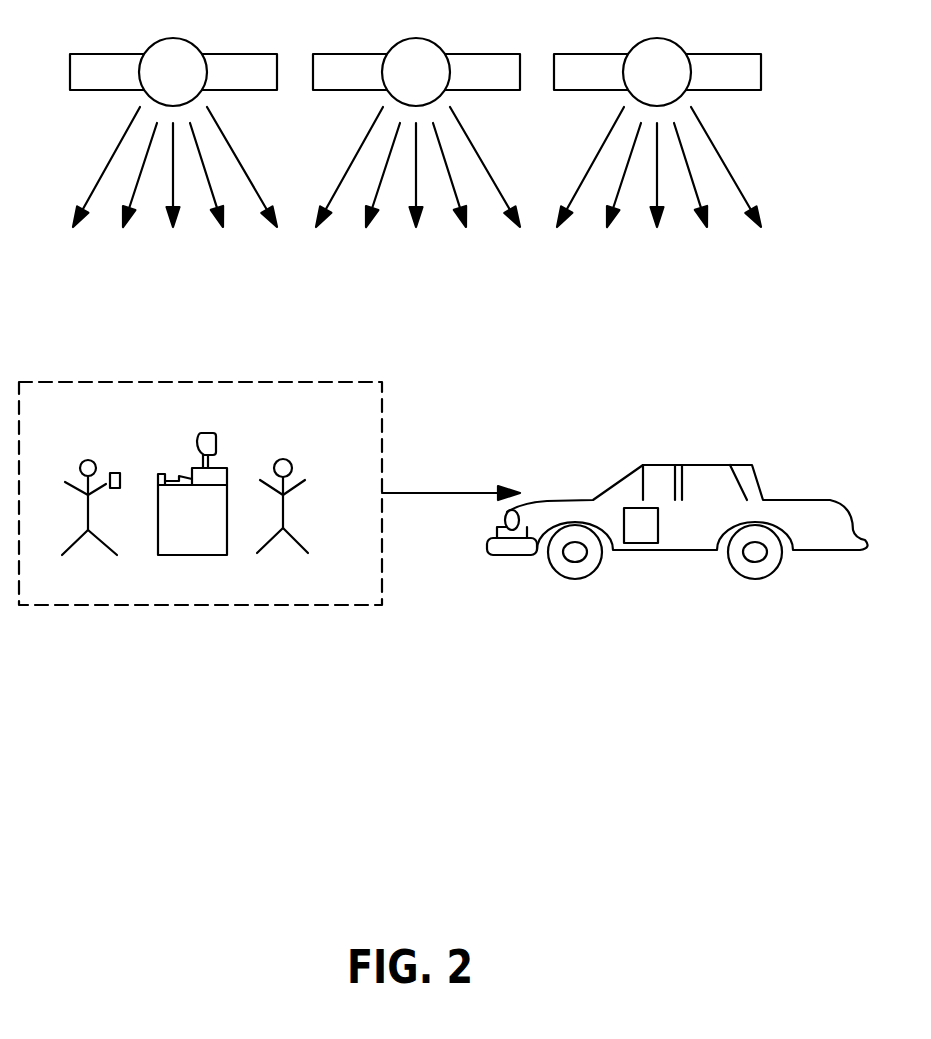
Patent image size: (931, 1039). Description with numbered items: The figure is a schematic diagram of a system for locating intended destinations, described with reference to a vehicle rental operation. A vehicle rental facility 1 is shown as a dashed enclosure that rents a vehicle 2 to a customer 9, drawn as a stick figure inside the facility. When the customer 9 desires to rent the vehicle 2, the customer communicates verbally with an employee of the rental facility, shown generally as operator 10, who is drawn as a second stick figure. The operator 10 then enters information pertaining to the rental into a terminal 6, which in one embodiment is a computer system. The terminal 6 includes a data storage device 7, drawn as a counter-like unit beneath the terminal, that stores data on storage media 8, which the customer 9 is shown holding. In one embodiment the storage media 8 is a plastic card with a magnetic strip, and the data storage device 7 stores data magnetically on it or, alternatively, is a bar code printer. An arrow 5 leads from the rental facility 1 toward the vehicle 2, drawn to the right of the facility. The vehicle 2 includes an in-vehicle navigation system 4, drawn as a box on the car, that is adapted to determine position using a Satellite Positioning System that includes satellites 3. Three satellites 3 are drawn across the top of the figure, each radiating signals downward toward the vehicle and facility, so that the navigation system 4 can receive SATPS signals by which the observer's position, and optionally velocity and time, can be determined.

The vehicle rental facility 1 is at (366, 600).
The vehicle 2 is at (797, 499).
The satellites 3 is at (415, 132).
The in-vehicle navigation system 4 is at (641, 525).
The vehicle departure from rental facility 5 is at (420, 493).
The terminal 6 is at (214, 439).
The data storage device 7 is at (158, 473).
The storage media 8 is at (114, 473).
The customer 9 is at (90, 507).
The operator 10 is at (283, 505).